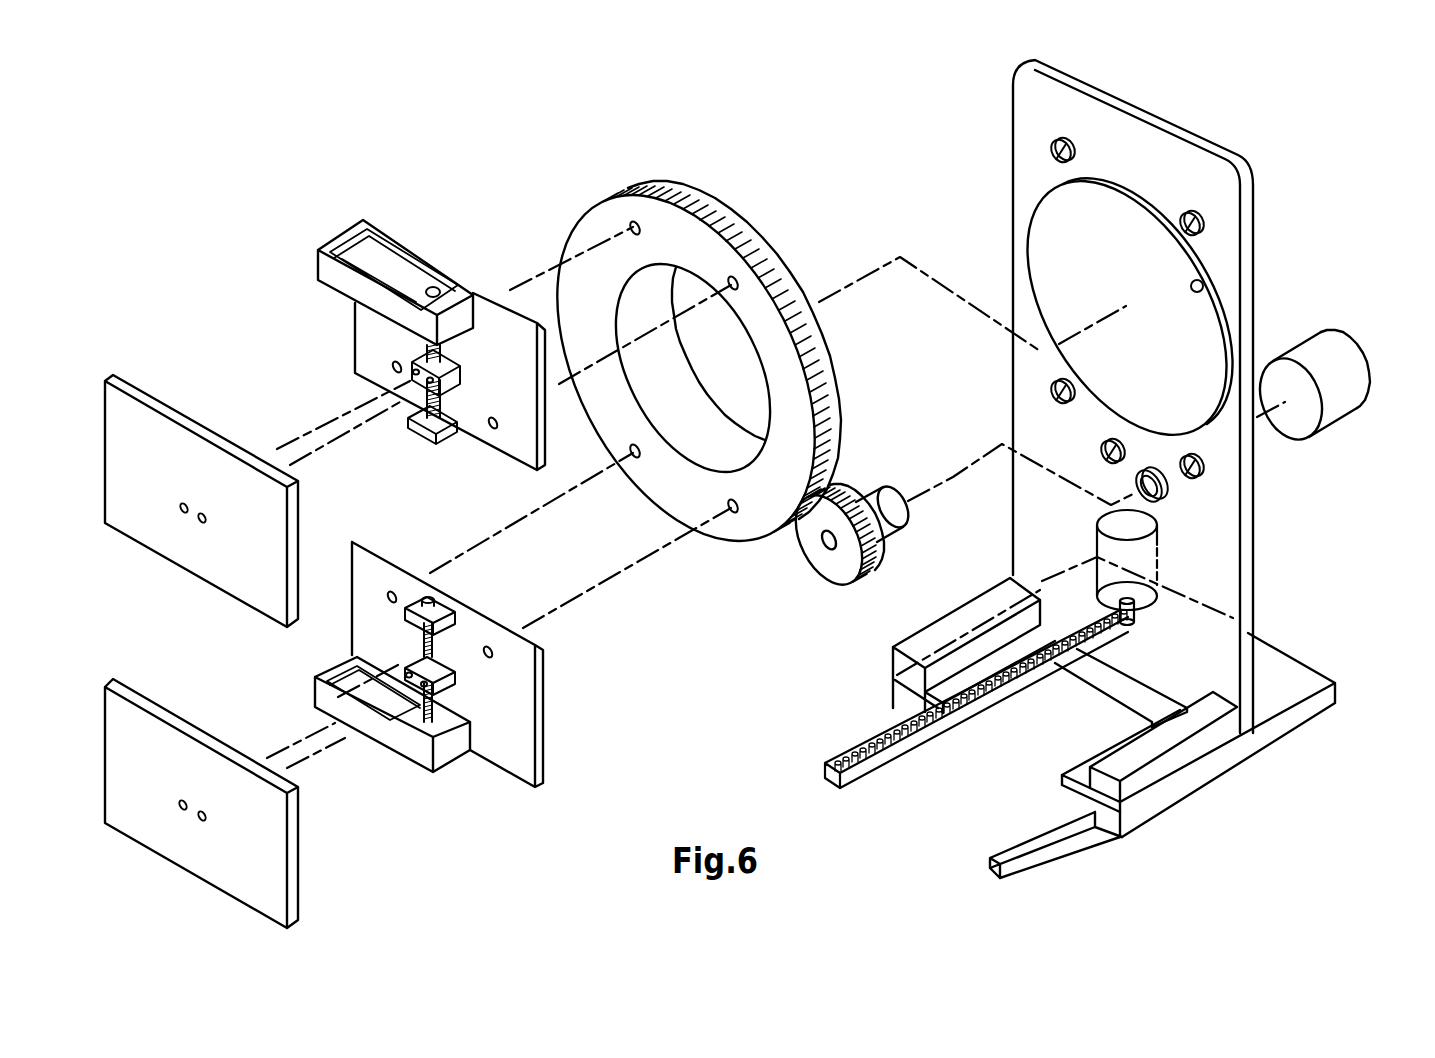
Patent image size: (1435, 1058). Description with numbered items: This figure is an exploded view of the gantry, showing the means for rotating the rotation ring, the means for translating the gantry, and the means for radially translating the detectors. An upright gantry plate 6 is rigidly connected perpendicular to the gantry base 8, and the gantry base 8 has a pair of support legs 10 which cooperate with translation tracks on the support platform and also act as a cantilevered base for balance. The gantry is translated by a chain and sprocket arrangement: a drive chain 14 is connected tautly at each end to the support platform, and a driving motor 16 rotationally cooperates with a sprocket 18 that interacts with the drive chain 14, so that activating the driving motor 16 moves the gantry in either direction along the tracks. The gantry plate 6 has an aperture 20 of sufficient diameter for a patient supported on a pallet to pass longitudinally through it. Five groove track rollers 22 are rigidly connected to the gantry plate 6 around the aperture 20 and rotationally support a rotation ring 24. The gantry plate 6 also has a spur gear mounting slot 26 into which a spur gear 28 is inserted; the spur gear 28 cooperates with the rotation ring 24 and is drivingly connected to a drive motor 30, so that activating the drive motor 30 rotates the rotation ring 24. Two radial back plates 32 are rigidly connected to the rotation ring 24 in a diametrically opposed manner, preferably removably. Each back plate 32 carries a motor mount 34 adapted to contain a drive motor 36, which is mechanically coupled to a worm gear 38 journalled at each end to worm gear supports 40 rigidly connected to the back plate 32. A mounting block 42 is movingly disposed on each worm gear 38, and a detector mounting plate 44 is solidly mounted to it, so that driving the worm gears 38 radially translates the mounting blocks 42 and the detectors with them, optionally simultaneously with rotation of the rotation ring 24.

The gantry plate 6 is at (1214, 184).
The gantry base 8 is at (1284, 674).
The support legs 10 is at (907, 699).
The drive chain 14 is at (915, 747).
The driving motor 16 is at (1141, 525).
The sprocket 18 is at (1130, 625).
The aperture 20 is at (1209, 295).
The groove track rollers 22 is at (1184, 220).
The rotation ring 24 is at (674, 237).
The spur gear mounting slot 26 is at (1160, 499).
The spur gear 28 is at (838, 562).
The drive motor 30 is at (1332, 362).
The radial back plates 32 is at (510, 340).
The motor mount 34 is at (338, 273).
The drive motor 36 is at (374, 256).
The worm gear 38 is at (417, 430).
The worm gear supports 40 is at (453, 293).
The mounting block 42 is at (503, 668).
The detector mounting plate 44 is at (242, 543).